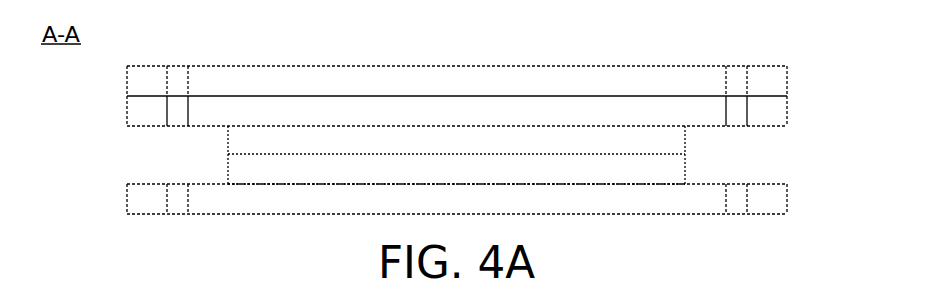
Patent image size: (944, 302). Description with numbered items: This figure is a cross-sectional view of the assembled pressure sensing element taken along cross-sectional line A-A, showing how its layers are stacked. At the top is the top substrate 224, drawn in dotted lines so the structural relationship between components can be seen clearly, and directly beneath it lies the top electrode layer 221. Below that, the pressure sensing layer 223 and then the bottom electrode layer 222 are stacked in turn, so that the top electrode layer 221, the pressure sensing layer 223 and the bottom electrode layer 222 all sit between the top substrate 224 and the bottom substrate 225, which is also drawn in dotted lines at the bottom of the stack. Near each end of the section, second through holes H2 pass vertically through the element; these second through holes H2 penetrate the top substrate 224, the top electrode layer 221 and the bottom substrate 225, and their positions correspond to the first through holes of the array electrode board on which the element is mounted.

The top substrate 224 is at (778, 82).
The top electrode layer 221 is at (778, 110).
The pressure sensing layer 223 is at (672, 138).
The bottom electrode layer 222 is at (672, 170).
The bottom substrate 225 is at (778, 197).
The second through holes H2 is at (178, 60).